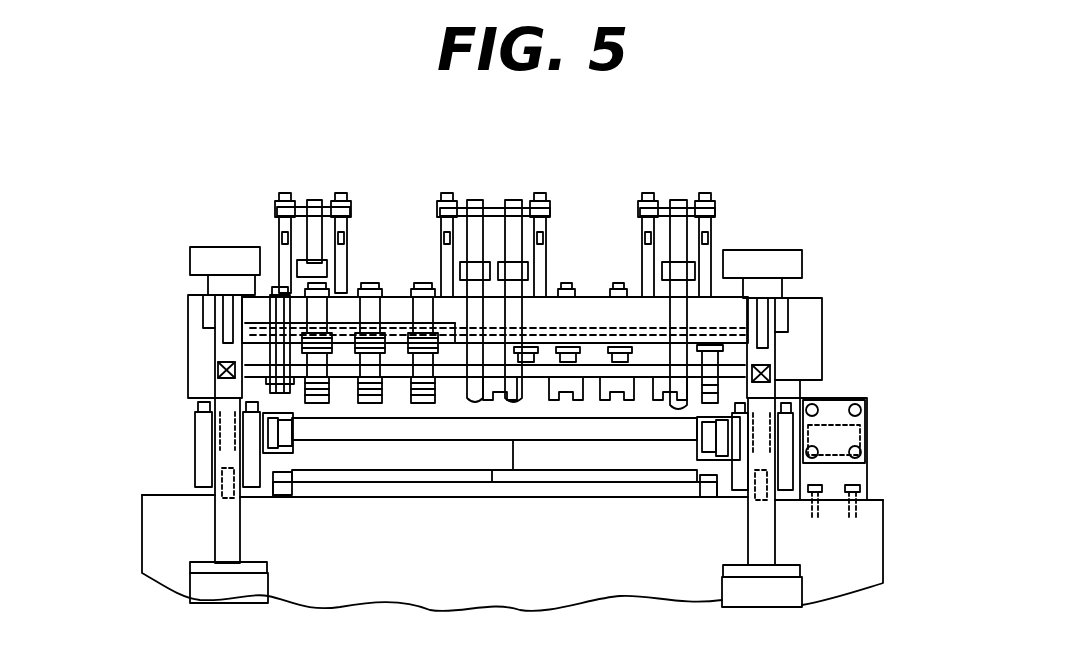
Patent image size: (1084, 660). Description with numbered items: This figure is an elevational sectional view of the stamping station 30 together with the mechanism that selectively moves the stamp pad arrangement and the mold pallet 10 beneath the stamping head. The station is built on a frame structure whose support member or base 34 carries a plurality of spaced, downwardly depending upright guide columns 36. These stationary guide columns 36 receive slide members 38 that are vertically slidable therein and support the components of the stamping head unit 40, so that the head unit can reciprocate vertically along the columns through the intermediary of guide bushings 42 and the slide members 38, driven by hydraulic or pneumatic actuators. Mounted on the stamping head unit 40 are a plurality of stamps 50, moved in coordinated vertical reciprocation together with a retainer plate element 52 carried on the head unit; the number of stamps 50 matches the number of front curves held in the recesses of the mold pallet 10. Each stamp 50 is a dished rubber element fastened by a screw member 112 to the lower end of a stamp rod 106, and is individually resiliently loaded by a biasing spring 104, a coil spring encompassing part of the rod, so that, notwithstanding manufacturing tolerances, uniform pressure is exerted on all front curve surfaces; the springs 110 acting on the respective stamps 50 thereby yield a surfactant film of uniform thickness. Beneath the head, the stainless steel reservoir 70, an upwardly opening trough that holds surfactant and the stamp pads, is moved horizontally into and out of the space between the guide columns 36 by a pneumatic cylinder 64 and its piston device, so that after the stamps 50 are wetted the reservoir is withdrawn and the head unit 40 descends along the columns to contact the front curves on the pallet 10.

The mold pallet 10 is at (446, 478).
The stamping station 30 is at (766, 241).
The base 34 is at (142, 532).
The guide columns 36 is at (270, 593).
The slide members 38 is at (246, 508).
The stamping head unit 40 is at (584, 296).
The guide bushings 42 is at (262, 320).
The stamps 50 is at (439, 402).
The retainer plate element 52 is at (397, 402).
The pneumatic cylinder 64 is at (868, 442).
The reservoir 70 is at (513, 443).
The biasing spring 104 is at (453, 347).
The stamp rod 106 is at (318, 318).
The springs 110 is at (487, 278).
The screw member 112 is at (371, 402).